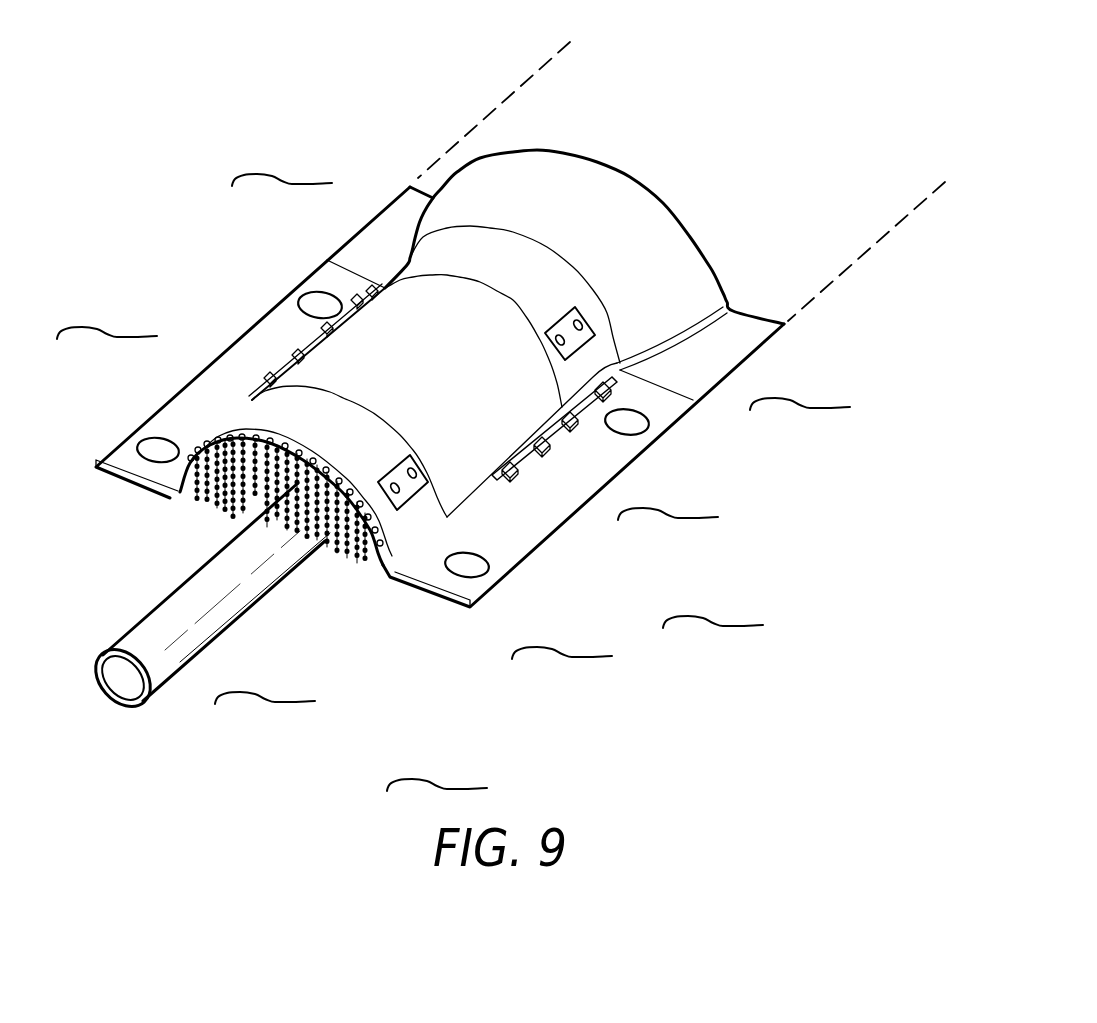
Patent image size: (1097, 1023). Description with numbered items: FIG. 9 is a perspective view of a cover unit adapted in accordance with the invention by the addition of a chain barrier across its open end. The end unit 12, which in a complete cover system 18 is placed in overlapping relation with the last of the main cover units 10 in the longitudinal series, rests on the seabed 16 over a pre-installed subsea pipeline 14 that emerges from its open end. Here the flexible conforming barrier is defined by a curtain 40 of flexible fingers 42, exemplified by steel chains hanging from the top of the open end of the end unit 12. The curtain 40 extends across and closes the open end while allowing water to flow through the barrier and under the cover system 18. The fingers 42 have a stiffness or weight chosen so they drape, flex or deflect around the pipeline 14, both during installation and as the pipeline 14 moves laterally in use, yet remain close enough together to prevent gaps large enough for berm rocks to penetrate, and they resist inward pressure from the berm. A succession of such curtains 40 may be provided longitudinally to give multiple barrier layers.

The main cover unit 10 is at (496, 100).
The end unit 12 is at (630, 159).
The subsea pipeline 14 is at (238, 603).
The seabed 16 is at (701, 577).
The cover system 18 is at (363, 172).
The curtain 40 is at (265, 535).
The flexible fingers 42 is at (232, 499).